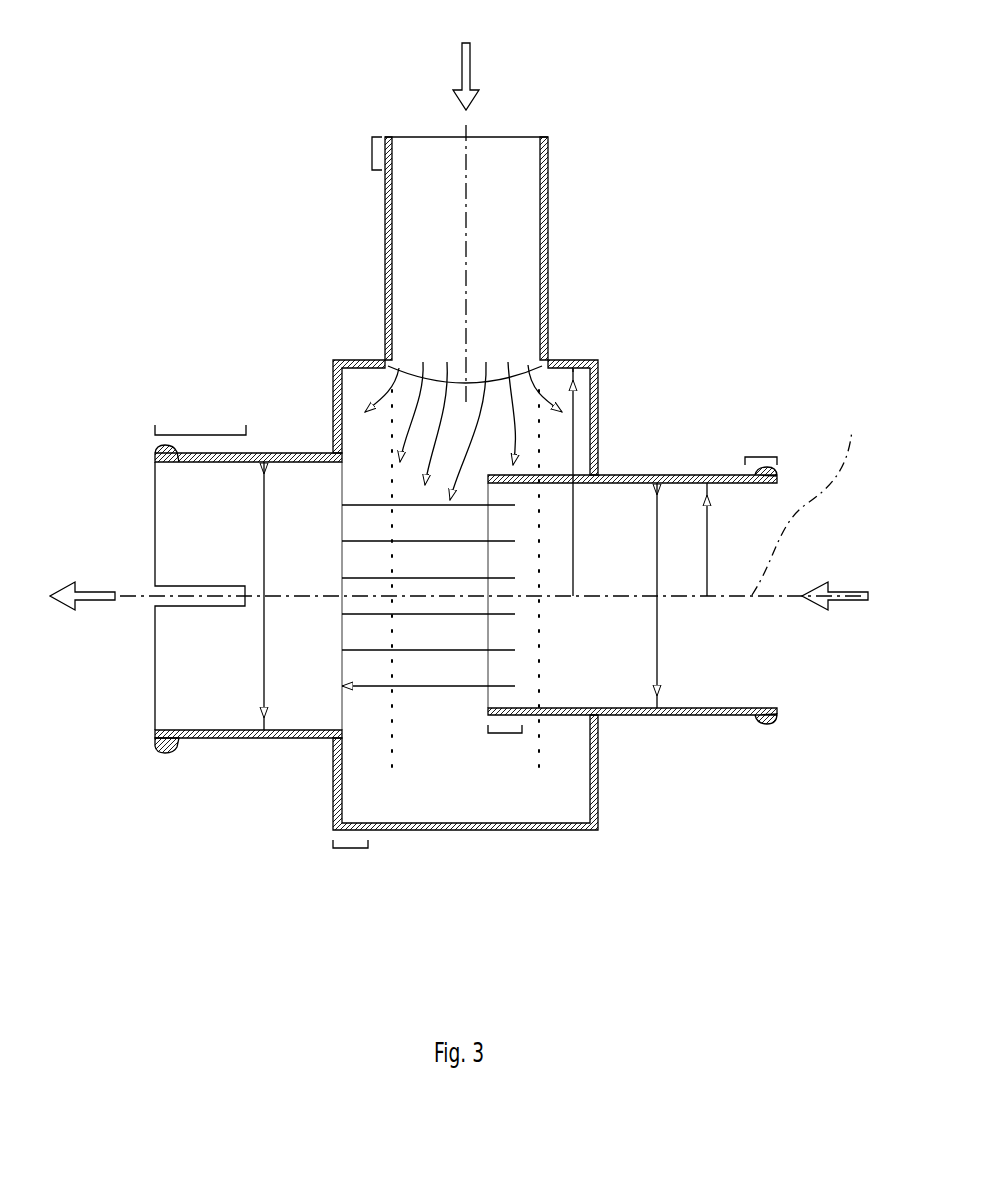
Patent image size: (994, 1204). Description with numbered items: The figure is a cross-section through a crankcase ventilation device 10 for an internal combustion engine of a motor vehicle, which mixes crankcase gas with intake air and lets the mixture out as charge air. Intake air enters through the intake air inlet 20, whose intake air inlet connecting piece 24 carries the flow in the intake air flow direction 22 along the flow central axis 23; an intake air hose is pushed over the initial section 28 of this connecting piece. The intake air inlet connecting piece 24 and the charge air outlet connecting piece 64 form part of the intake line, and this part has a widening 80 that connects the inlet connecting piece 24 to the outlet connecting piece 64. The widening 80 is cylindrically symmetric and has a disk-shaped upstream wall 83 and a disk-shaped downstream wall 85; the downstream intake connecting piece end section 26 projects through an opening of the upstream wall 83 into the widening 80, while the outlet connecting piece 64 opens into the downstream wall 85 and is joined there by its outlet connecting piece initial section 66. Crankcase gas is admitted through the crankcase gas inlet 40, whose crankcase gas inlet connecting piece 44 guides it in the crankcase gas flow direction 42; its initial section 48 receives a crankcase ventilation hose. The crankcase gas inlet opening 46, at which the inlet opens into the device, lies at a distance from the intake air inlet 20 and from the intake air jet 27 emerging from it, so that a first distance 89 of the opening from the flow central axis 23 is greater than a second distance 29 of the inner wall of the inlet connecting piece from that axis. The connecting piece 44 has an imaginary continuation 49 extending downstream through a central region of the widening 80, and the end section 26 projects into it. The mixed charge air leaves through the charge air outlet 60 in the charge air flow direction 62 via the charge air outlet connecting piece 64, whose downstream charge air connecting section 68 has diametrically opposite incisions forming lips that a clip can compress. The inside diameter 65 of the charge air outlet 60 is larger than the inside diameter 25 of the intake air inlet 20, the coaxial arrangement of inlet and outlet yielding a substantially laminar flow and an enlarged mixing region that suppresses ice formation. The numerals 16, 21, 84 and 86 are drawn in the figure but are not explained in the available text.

The crankcase ventilation device 10 is at (630, 157).
The housing 16 is at (688, 264).
The intake air inlet 20 is at (783, 663).
The inlet pipe upper wall 21 is at (683, 475).
The intake air flow direction 22 is at (847, 590).
The flow central axis 23 is at (815, 494).
The intake air inlet connecting piece 24 is at (697, 718).
The inside diameter of the intake air inlet 25 is at (657, 635).
The intake connecting piece end section 26 is at (505, 733).
The intake air jet 27 is at (320, 677).
The initial section 28 is at (766, 457).
The second distance 29 is at (707, 537).
The crankcase gas inlet 40 is at (418, 120).
The crankcase gas flow direction 42 is at (470, 65).
The crankcase gas inlet connecting piece 44 is at (383, 248).
The crankcase gas inlet opening 46 is at (401, 372).
The initial section 48 is at (372, 153).
The imaginary continuation 49 is at (392, 752).
The charge air outlet 60 is at (148, 663).
The charge air flow direction 62 is at (92, 590).
The charge air outlet connecting piece 64 is at (165, 745).
The inside diameter of the charge air outlet 65 is at (264, 662).
The outlet connecting piece initial section 66 is at (312, 740).
The charge air connecting section 68 is at (200, 435).
The widening 80 is at (466, 832).
The upstream wall 83 is at (598, 417).
The flow along wall 84 is at (566, 362).
The downstream wall 85 is at (333, 407).
The housing corner region 86 is at (351, 848).
The first distance 89 is at (573, 537).